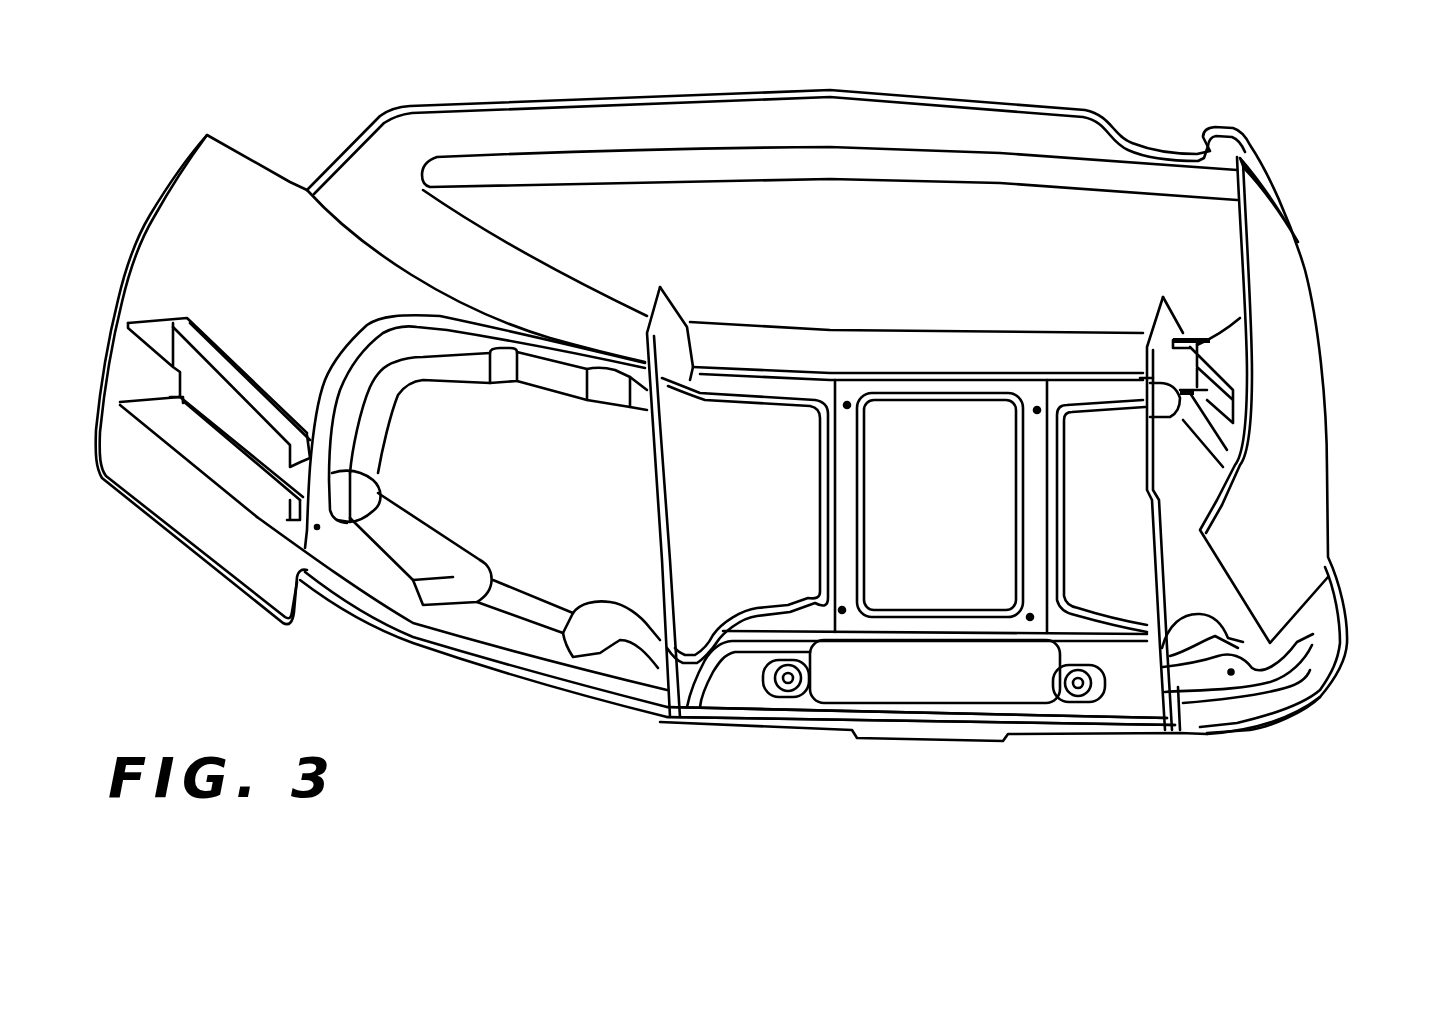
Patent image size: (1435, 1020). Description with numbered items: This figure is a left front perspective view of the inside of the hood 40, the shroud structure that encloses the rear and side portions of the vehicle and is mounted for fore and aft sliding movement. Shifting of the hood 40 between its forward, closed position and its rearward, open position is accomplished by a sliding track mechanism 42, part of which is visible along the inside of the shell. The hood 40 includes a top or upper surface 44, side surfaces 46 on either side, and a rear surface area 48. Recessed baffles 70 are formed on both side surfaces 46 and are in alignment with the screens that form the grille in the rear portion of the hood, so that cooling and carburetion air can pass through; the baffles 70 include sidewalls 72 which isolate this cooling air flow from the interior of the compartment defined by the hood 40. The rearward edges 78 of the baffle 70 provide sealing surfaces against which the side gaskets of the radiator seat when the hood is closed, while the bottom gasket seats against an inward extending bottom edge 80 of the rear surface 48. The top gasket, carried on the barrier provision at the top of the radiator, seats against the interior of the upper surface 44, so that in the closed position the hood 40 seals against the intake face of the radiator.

The hood 40 is at (887, 768).
The sliding track mechanism 42 is at (223, 343).
The upper surface 44 is at (987, 197).
The side surfaces 46 is at (262, 203).
The rear surface area 48 is at (1147, 737).
The recessed baffles 70 is at (455, 464).
The sidewalls 72 is at (1297, 640).
The rearward edges 78 is at (643, 492).
The bottom edge 80 is at (737, 718).